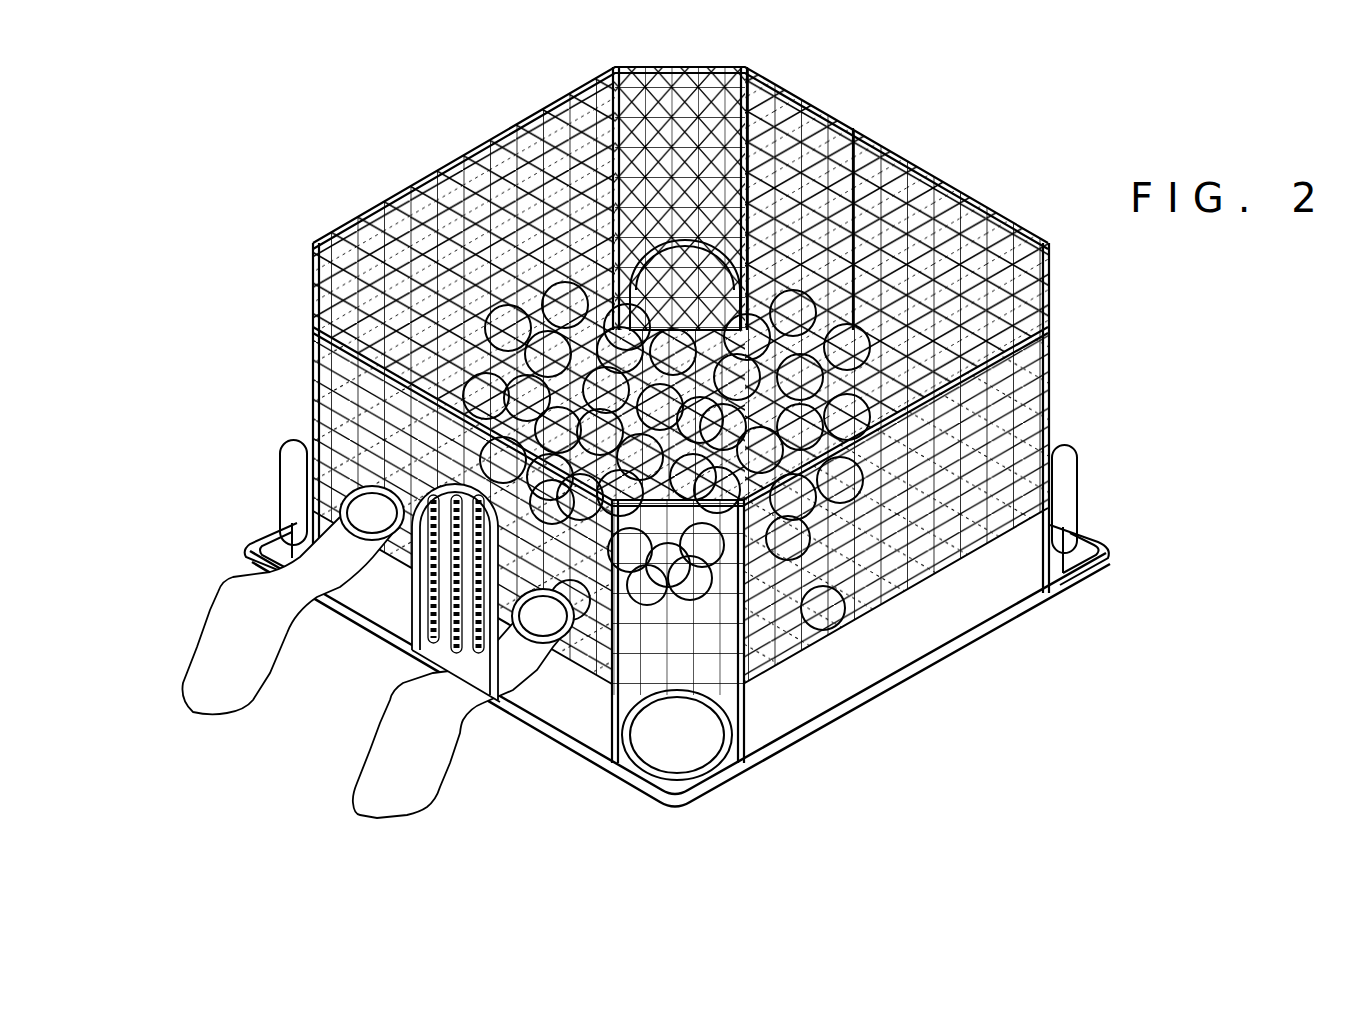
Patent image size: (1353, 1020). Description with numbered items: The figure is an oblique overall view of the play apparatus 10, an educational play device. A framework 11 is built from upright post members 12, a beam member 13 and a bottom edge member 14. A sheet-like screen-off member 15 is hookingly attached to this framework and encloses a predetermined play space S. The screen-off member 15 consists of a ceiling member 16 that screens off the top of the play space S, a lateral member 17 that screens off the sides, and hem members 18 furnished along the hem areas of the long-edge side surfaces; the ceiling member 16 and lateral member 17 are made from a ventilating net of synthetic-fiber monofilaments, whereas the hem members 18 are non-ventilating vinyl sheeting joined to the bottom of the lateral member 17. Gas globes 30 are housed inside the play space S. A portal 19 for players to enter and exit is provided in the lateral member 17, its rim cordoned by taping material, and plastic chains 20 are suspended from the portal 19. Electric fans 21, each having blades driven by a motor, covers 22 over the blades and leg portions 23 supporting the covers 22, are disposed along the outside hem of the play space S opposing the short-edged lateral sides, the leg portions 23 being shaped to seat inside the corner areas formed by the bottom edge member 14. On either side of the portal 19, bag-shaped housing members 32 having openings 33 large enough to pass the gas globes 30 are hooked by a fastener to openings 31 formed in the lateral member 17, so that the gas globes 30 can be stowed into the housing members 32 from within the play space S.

The play apparatus 10 is at (388, 112).
The framework 11 is at (676, 436).
The post members 12 is at (676, 436).
The beam member 13 is at (923, 172).
The bottom edge member 14 is at (1000, 622).
The screen-off member 15 is at (711, 437).
The ceiling member 16 is at (847, 137).
The lateral member 17 is at (1030, 392).
The hem members 18 is at (827, 700).
The portal 19 is at (417, 657).
The chains 20 is at (428, 640).
The electric fans 21 is at (678, 632).
The covers 22 is at (1072, 503).
The leg portions 23 is at (1100, 540).
The gas globes 30 is at (837, 627).
The openings 31 is at (428, 643).
The housing members 32 is at (213, 633).
The openings 33 is at (368, 520).
The play space S is at (458, 348).